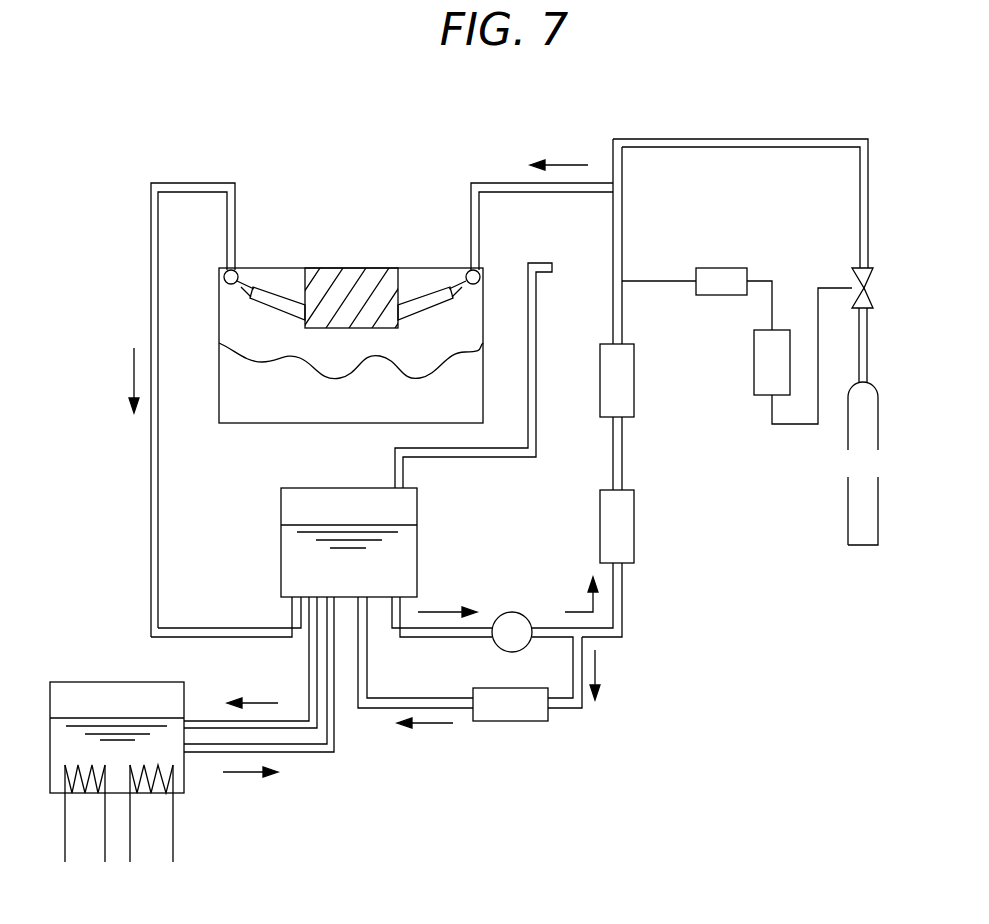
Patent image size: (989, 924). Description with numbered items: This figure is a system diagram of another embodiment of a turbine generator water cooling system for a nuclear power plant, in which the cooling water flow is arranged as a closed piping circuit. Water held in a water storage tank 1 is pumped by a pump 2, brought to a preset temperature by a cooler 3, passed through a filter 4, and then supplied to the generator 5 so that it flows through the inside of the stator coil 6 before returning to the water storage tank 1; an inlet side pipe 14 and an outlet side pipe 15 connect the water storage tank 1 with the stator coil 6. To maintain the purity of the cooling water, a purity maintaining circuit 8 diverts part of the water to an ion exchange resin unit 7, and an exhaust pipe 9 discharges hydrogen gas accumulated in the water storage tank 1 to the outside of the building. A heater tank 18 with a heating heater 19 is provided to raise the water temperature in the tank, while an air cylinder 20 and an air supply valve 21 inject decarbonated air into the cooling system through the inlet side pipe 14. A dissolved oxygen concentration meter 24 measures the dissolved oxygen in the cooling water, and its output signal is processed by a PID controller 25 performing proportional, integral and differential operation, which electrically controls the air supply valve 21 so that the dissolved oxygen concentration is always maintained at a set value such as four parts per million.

The water storage tank 1 is at (280, 512).
The pump 2 is at (515, 612).
The cooler 3 is at (634, 523).
The filter 4 is at (634, 365).
The generator 5 is at (415, 268).
The stator coil 6 is at (283, 297).
The ion exchange resin unit 7 is at (503, 722).
The purity maintaining circuit 8 is at (600, 638).
The exhaust pipe 9 is at (483, 457).
The inlet side pipe 14 is at (495, 182).
The outlet side pipe 15 is at (150, 465).
The heater tank 18 is at (117, 682).
The heating heater 19 is at (172, 840).
The air cylinder 20 is at (865, 528).
The air supply valve 21 is at (870, 285).
The dissolved oxygen concentration meter 24 is at (730, 268).
The PID controller 25 is at (754, 365).